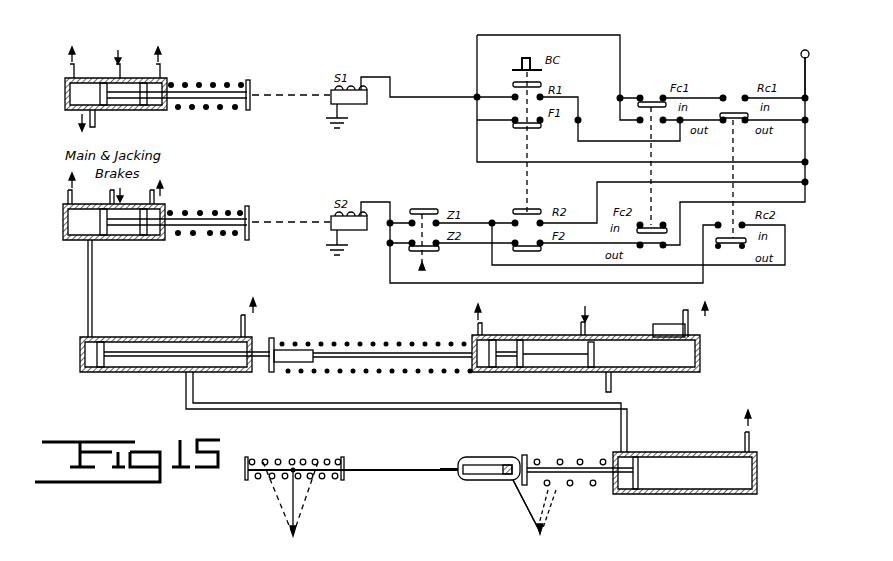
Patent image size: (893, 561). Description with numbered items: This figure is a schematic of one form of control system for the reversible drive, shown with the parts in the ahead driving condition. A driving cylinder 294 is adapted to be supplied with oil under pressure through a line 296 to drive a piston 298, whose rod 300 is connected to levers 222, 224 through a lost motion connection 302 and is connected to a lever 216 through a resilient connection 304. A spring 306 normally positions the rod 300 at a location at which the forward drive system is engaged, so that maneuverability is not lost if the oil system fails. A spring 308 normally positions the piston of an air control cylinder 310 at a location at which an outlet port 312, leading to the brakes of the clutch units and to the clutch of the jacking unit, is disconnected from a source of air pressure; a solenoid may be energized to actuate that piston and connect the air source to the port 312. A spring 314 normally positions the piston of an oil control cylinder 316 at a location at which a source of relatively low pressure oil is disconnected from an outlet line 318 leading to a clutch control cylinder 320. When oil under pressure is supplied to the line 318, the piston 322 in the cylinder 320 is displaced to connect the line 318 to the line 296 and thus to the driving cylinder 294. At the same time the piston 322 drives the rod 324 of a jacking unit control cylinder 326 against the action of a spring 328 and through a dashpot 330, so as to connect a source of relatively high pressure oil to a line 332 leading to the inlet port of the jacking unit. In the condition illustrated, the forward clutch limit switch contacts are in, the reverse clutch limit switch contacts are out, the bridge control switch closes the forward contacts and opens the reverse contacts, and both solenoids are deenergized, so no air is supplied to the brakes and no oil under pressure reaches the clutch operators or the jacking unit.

The lever 216 is at (295, 502).
The lever 222 is at (522, 508).
The lever 224 is at (526, 506).
The driving cylinder 294 is at (690, 496).
The line 296 is at (628, 432).
The piston 298 is at (654, 486).
The rod 300 is at (610, 488).
The lost motion connection 302 is at (490, 456).
The resilient connection 304 is at (316, 440).
The spring 306 is at (556, 460).
The spring 308 is at (222, 82).
The air control cylinder 310 is at (97, 66).
The outlet port 312 is at (96, 124).
The spring 314 is at (200, 210).
The oil control cylinder 316 is at (65, 236).
The outlet line 318 is at (92, 292).
The clutch control cylinder 320 is at (192, 338).
The piston 322 is at (106, 346).
The rod 324 is at (432, 350).
The jacking unit control cylinder 326 is at (534, 340).
The spring 328 is at (356, 342).
The dashpot 330 is at (298, 352).
The line 332 is at (612, 386).